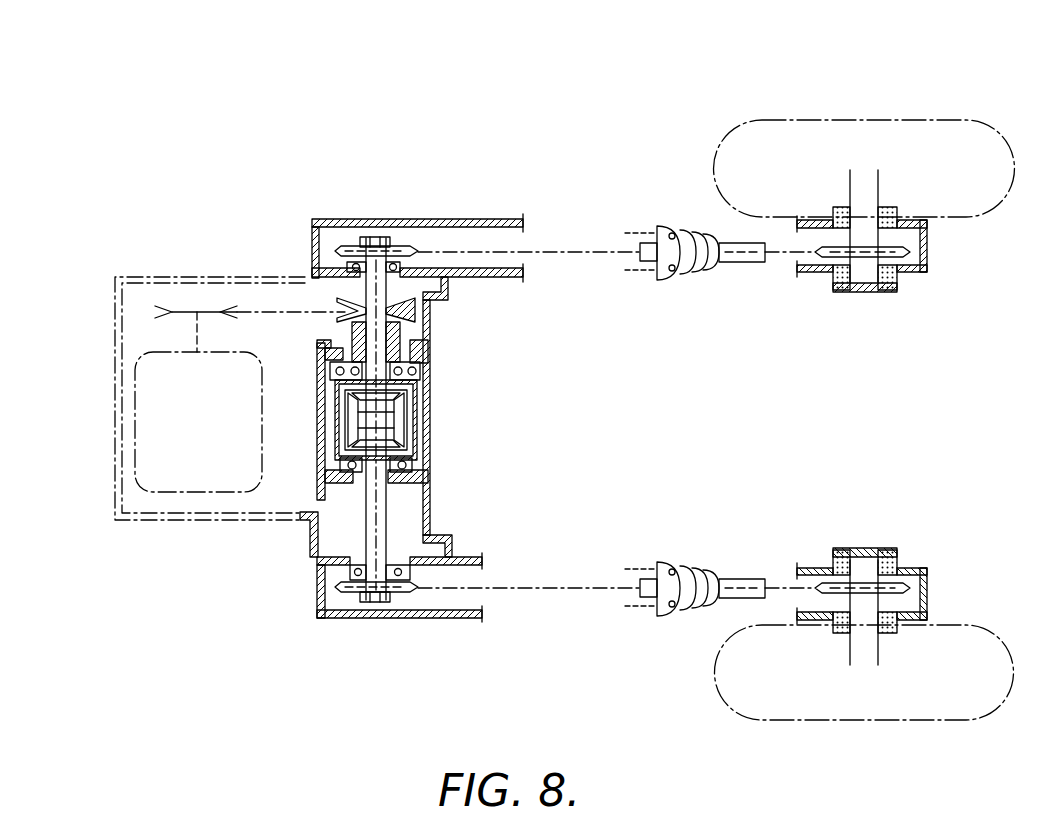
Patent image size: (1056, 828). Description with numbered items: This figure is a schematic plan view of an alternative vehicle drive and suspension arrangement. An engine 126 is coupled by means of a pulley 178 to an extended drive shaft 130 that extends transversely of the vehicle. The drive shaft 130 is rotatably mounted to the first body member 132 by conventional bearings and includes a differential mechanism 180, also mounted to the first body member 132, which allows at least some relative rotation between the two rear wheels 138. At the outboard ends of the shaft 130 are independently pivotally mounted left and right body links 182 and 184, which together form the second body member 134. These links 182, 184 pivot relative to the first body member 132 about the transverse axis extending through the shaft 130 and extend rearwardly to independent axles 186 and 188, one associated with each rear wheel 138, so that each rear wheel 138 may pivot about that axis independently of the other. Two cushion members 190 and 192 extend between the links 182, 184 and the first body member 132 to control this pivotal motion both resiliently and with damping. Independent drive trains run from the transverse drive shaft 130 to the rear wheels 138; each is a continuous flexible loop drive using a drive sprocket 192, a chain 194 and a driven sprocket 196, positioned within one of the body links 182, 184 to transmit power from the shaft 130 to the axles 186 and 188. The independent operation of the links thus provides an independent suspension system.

The engine 126 is at (135, 450).
The drive shaft 130 is at (375, 343).
The first body member 132 is at (318, 405).
The second body member 134 is at (399, 214).
The rear wheel 138 is at (930, 128).
The pulley 178 is at (340, 312).
The differential mechanism 180 is at (432, 426).
The left body link 182 is at (462, 618).
The right body link 184 is at (493, 221).
The axle 186 is at (875, 654).
The axle 188 is at (876, 192).
The cushion member 190 is at (672, 605).
The cushion member / drive sprocket 192 is at (354, 245).
The chain 194 is at (577, 250).
The driven sprocket 196 is at (892, 257).